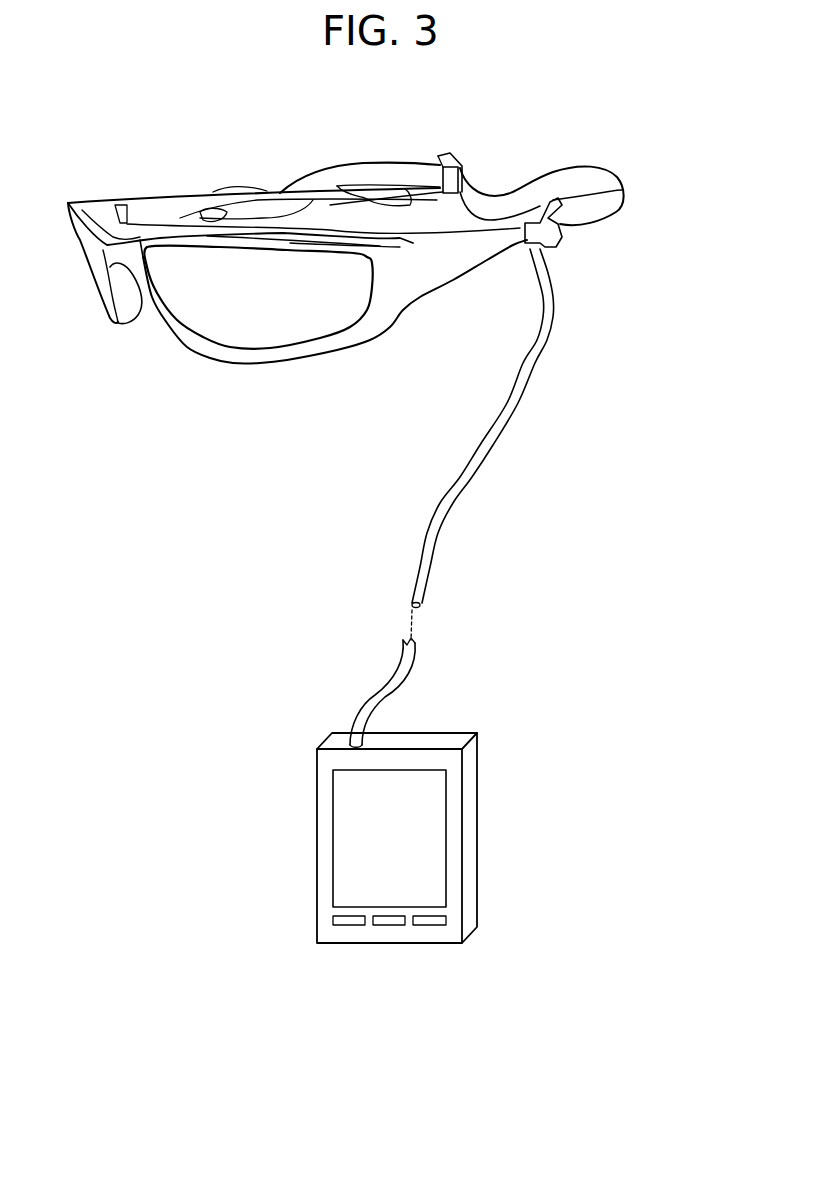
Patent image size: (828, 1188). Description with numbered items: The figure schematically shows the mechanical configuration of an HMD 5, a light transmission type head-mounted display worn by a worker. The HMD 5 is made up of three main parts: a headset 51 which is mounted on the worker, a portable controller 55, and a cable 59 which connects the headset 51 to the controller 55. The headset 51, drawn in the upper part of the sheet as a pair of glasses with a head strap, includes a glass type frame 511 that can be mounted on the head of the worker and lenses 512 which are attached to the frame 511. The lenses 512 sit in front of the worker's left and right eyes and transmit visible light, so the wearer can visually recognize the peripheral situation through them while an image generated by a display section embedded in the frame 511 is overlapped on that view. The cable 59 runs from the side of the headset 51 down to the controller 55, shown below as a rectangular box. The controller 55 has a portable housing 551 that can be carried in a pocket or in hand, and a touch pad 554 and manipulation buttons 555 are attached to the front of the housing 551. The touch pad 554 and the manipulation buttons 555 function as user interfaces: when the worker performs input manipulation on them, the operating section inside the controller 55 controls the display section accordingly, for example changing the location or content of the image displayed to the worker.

The HMD 5 is at (630, 155).
The headset 51 is at (92, 200).
The frame 511 is at (383, 312).
The lenses 512 is at (93, 271).
The cable 59 is at (507, 405).
The controller 55 is at (467, 785).
The housing 551 is at (472, 880).
The touch pad 554 is at (352, 852).
The manipulation buttons 555 is at (428, 925).